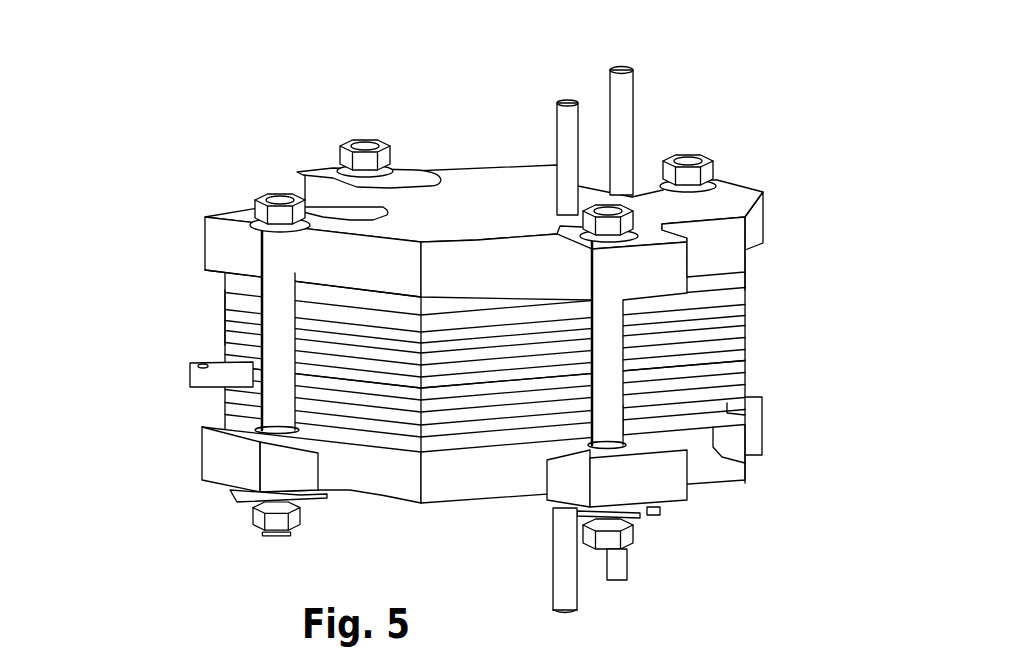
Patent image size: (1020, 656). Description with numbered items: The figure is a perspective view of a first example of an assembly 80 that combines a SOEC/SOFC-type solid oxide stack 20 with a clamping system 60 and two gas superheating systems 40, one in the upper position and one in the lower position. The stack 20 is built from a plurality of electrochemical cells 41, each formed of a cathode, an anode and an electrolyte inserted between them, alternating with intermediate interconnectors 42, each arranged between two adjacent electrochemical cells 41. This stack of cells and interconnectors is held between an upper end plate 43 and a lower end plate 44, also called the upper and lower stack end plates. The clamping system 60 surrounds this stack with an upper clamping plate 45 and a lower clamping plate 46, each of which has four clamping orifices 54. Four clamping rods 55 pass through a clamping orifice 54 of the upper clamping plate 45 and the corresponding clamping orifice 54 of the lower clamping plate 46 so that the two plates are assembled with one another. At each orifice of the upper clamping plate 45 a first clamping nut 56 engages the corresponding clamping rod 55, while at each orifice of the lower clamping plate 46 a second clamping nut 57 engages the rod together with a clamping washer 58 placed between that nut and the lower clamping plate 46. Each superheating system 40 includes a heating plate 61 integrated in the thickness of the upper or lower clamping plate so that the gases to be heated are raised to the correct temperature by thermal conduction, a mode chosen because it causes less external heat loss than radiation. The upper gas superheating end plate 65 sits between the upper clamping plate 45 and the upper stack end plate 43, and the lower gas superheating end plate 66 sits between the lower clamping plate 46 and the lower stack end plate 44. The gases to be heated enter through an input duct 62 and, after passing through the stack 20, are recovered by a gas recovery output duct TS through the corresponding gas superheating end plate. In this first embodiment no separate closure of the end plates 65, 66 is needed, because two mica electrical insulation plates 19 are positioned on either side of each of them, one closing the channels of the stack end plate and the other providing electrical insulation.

The assembly 80 is at (162, 94).
The clamping system 60 is at (769, 152).
The gas superheating system 40 is at (462, 55).
The SOEC/SOFC-type solid oxide stack 20 is at (172, 275).
The electrical insulation plate 19 is at (743, 272).
The electrochemical cell 41 is at (743, 334).
The intermediate interconnector 42 is at (743, 362).
The upper end plate 43 is at (737, 302).
The lower end plate 44 is at (733, 398).
The upper clamping plate 45 is at (220, 238).
The lower clamping plate 46 is at (218, 460).
The clamping orifice 54 is at (246, 193).
The clamping rod 55 is at (227, 318).
The first clamping nut 56 is at (362, 158).
The second clamping nut 57 is at (258, 516).
The clamping washer 58 is at (240, 497).
The heating plate 61 is at (451, 320).
The input duct 62 is at (557, 123).
The upper gas superheating end plate 65 is at (466, 305).
The lower gas superheating end plate 66 is at (223, 388).
The gas recovery output duct TS is at (611, 84).